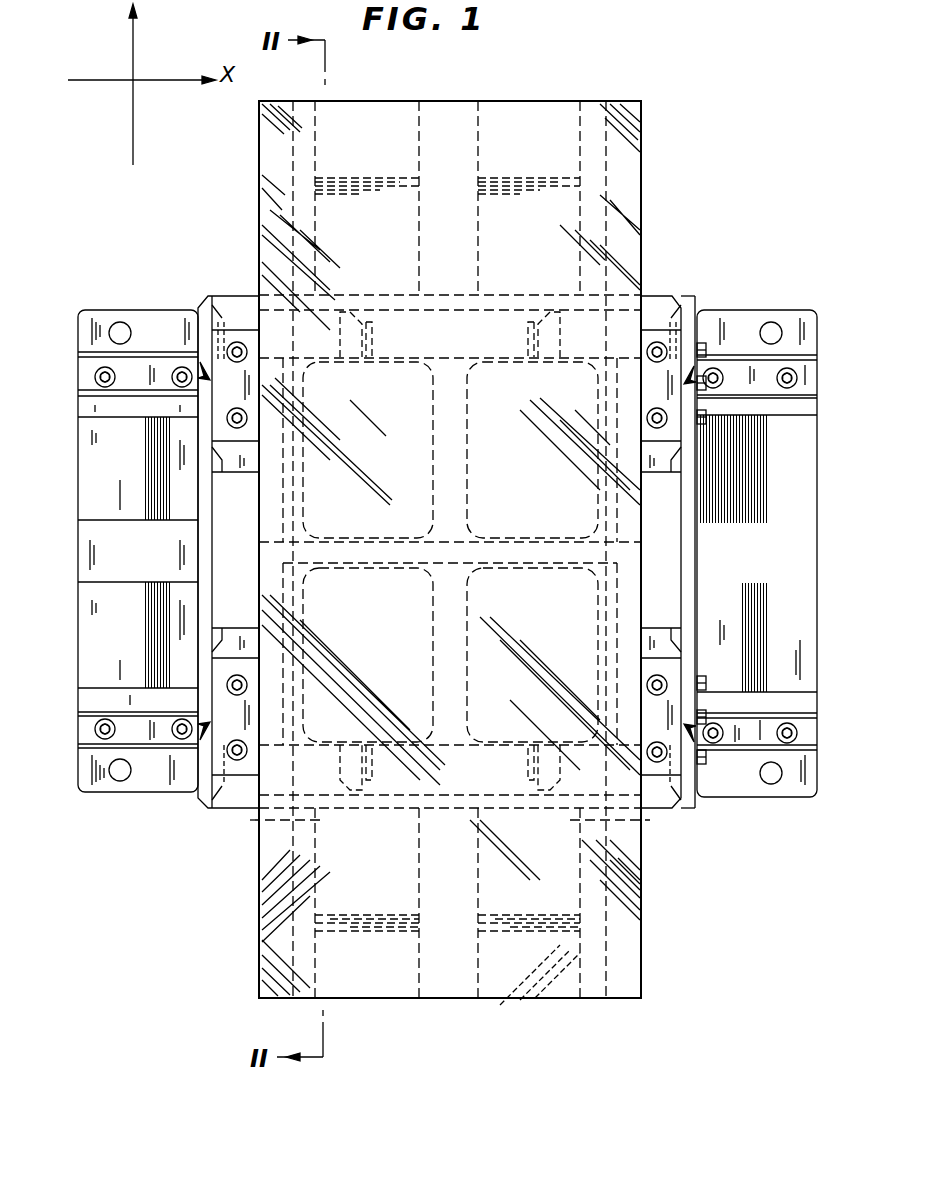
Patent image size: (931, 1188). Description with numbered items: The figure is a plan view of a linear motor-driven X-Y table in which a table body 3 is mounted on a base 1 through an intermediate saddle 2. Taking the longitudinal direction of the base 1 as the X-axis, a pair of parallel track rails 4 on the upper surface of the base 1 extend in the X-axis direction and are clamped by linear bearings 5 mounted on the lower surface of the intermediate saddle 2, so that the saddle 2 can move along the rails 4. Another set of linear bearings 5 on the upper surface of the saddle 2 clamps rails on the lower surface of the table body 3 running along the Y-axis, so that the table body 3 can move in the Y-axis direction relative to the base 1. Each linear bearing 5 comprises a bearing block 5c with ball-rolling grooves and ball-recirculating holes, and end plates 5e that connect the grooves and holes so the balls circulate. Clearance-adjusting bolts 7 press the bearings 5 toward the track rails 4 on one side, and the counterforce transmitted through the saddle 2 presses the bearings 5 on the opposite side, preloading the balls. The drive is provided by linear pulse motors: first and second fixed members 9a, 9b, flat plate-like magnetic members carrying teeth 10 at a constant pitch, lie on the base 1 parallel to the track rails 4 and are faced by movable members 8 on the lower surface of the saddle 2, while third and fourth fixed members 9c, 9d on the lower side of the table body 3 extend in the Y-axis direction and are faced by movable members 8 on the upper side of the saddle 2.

The base 1 is at (142, 795).
The intermediate saddle 2 is at (198, 607).
The table body 3 is at (259, 193).
The track rails 4 is at (88, 375).
The linear bearings 5 is at (222, 392).
The bearing block 5c is at (208, 378).
The end plates 5e is at (223, 340).
The clearance-adjusting bolts 7 is at (705, 347).
The movable members 8 is at (457, 382).
The first fixed member 9a is at (96, 468).
The second fixed member 9b is at (98, 606).
The third fixed member 9c is at (373, 145).
The fourth fixed member 9d is at (533, 145).
The teeth 10 is at (145, 450).